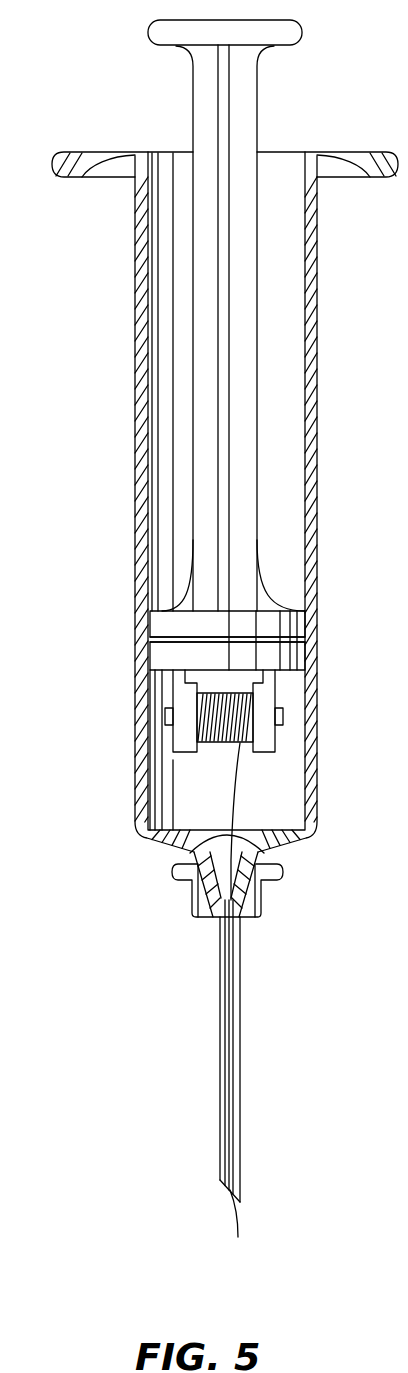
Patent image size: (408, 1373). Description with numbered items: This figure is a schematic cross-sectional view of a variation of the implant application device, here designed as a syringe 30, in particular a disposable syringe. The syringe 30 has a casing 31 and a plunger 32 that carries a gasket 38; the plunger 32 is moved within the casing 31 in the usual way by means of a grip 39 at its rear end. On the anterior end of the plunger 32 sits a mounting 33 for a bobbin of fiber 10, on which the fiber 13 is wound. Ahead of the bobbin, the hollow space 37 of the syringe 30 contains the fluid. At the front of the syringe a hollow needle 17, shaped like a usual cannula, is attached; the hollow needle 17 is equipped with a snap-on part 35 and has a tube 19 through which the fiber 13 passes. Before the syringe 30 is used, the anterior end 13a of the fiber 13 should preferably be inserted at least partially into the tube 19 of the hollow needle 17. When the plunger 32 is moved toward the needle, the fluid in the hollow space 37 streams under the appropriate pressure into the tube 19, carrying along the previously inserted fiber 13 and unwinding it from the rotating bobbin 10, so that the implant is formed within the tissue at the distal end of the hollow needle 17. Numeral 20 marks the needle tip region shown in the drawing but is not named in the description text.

The syringe 30 is at (338, 88).
The grip 39 is at (168, 33).
The casing 31 is at (135, 555).
The plunger 32 is at (158, 620).
The gasket 38 is at (155, 643).
The mounting 33 is at (173, 693).
The bobbin of fiber 10 is at (203, 738).
The hollow space 37 is at (200, 787).
The fiber 13 is at (187, 845).
The snap-on part 35 is at (190, 882).
The hollow needle 17 is at (220, 1015).
The tube 19 is at (220, 1097).
The needle tip 20 is at (220, 1180).
The anterior end 13a is at (237, 1222).